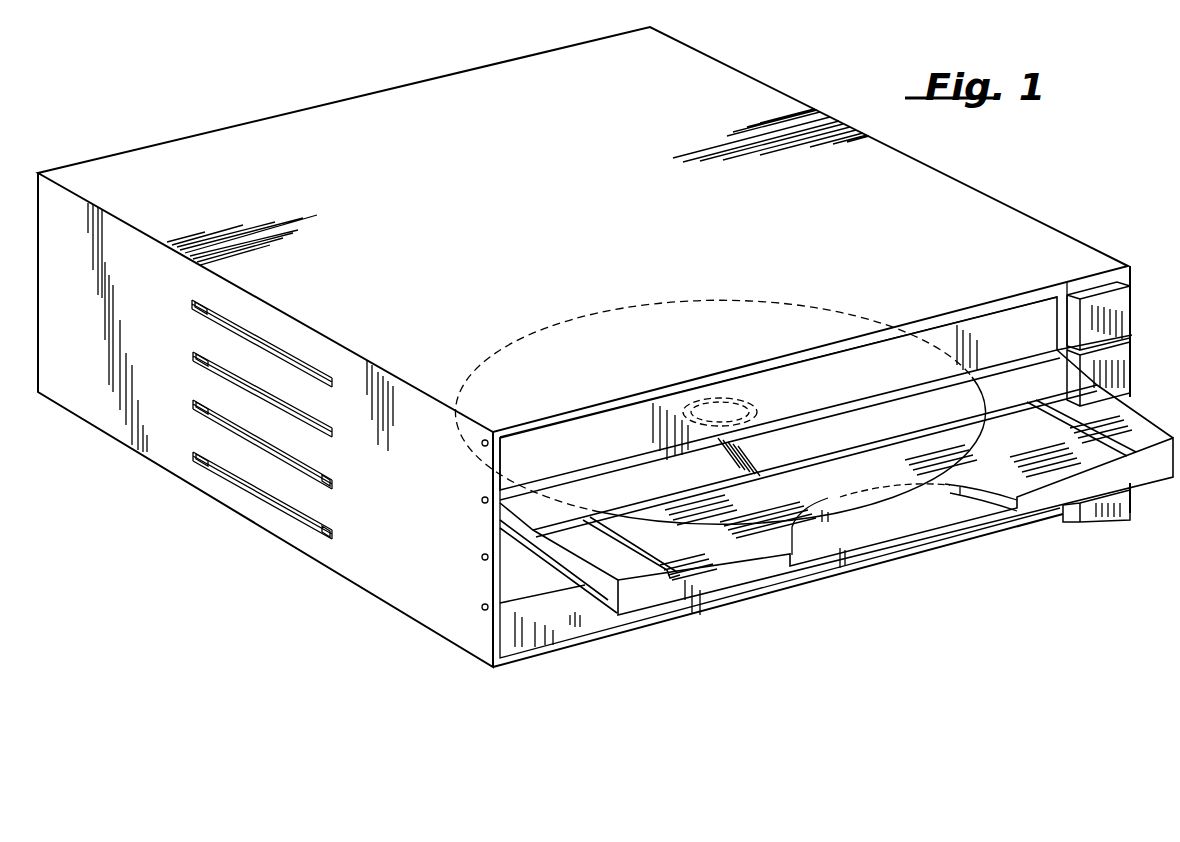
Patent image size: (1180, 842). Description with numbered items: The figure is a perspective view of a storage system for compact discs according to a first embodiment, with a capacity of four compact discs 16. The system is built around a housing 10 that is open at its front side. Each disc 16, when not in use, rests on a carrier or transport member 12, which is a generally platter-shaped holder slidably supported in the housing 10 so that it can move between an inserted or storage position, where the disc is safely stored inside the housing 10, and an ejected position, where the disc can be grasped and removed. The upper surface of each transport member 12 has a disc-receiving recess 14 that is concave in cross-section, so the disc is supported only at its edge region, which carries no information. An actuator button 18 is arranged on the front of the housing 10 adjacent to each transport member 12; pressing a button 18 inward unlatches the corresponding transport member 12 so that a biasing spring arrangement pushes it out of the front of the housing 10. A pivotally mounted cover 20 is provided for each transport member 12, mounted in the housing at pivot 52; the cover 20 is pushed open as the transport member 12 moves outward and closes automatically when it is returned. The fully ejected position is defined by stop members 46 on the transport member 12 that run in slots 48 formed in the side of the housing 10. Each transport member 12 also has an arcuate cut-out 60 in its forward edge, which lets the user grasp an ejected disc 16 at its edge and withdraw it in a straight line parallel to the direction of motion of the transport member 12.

The housing 10 is at (775, 87).
The transport member 12 is at (1152, 440).
The disc-receiving recess 14 is at (1007, 478).
The compact disc 16 is at (770, 508).
The actuator button 18 is at (1128, 362).
The cover 20 is at (576, 430).
The stop member 46 is at (199, 303).
The slot 48 is at (201, 354).
The pivot mounting of the cover 52 is at (481, 498).
The arcuate cut-out 60 is at (947, 493).